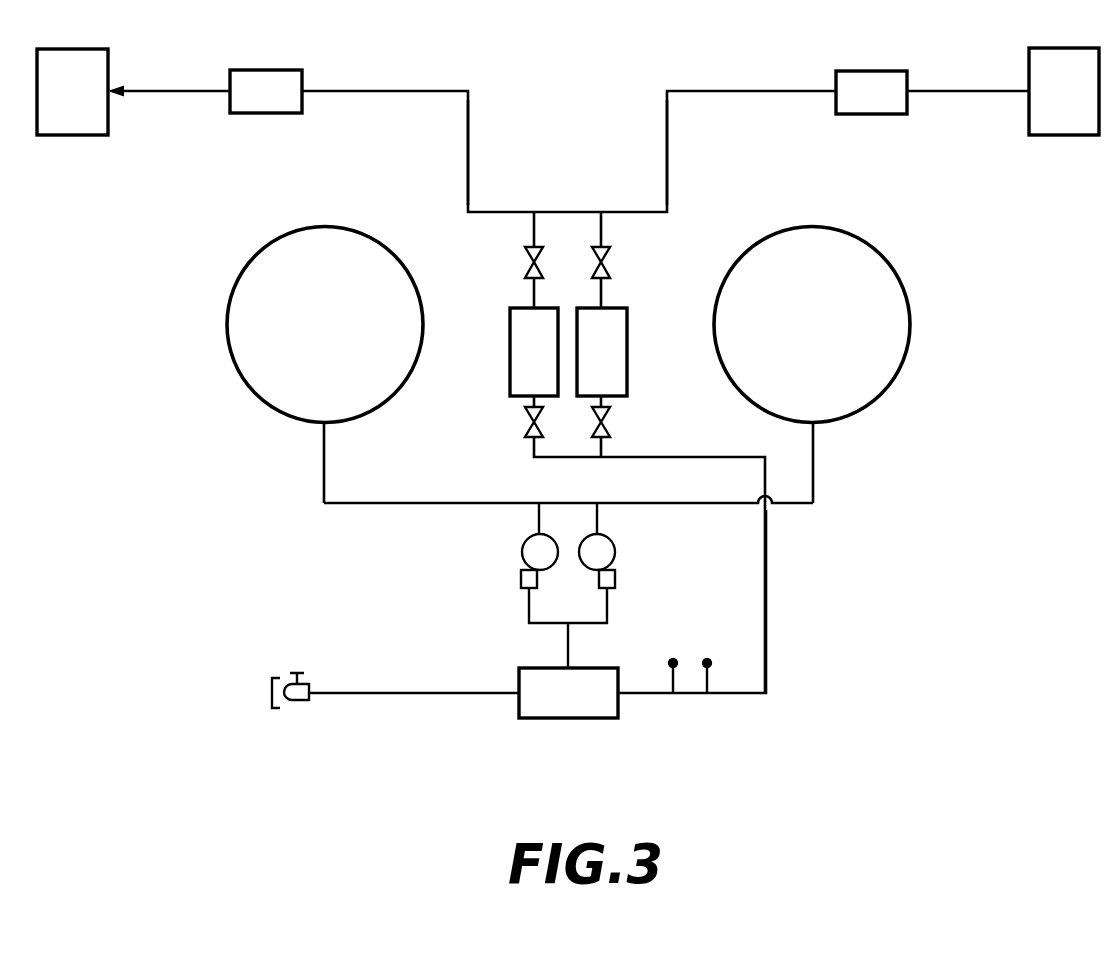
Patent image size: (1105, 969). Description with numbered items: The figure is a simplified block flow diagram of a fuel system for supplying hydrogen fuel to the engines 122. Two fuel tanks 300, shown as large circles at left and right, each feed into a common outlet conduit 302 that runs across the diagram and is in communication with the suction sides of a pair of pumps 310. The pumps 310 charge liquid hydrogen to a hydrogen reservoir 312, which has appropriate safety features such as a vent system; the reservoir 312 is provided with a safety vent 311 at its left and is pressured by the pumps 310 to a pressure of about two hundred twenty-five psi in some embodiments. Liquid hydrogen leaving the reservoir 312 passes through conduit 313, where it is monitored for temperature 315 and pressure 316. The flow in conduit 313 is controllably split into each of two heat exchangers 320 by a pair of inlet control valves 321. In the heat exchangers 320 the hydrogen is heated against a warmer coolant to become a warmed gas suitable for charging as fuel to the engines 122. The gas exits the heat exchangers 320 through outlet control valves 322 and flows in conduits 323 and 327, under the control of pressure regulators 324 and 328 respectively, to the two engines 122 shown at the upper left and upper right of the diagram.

The engine 122 is at (54, 106).
The fuel tank 300 is at (254, 255).
The common outlet conduit 302 is at (377, 503).
The pump 310 is at (522, 552).
The safety vent 311 is at (300, 702).
The hydrogen reservoir 312 is at (550, 707).
The conduit 313 is at (766, 568).
The temperature monitoring 315 is at (673, 658).
The pressure monitoring 316 is at (707, 658).
The heat exchanger 320 is at (516, 362).
The inlet control valve 321 is at (528, 416).
The outlet control valve 322 is at (528, 258).
The conduit 323 is at (468, 172).
The pressure regulator 324 is at (248, 107).
The conduit 327 is at (667, 168).
The pressure regulator 328 is at (853, 107).